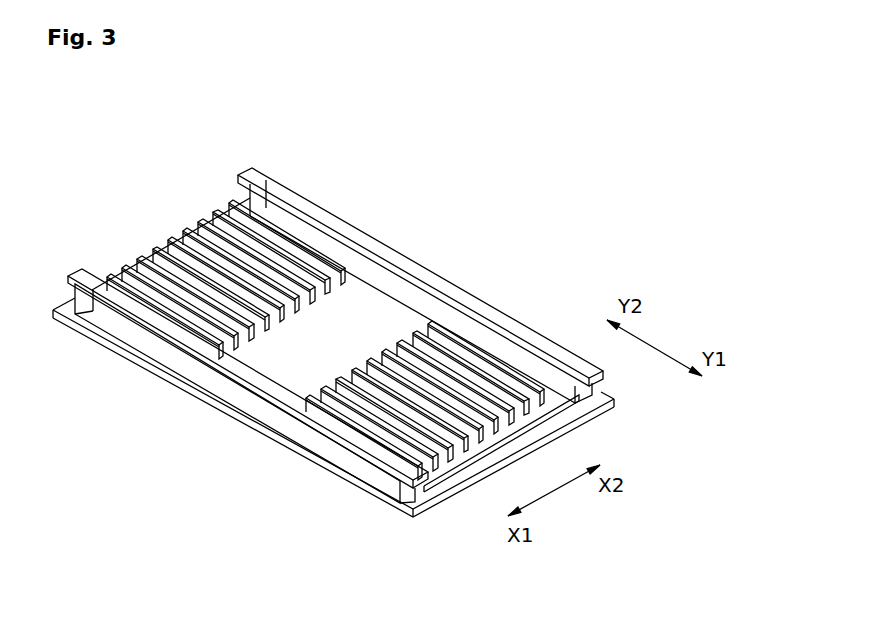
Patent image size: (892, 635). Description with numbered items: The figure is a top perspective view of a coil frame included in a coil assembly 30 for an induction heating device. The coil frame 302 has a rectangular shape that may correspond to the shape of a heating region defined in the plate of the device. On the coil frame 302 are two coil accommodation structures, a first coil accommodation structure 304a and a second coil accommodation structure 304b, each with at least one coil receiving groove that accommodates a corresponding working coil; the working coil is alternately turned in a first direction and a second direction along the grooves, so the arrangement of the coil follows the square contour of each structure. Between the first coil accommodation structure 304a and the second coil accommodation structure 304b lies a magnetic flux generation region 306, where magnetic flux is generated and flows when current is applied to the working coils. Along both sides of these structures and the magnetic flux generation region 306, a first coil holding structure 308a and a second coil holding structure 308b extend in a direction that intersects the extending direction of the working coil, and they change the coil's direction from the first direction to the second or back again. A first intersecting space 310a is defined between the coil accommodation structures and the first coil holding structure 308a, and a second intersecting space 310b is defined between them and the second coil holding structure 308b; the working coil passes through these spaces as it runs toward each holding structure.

The coil assembly 30 is at (384, 172).
The coil frame 302 is at (132, 360).
The first coil accommodation structure 304a is at (303, 233).
The second coil accommodation structure 304b is at (513, 352).
The magnetic flux generation region 306 is at (345, 309).
The first coil holding structure 308a is at (83, 278).
The second coil holding structure 308b is at (257, 176).
The first intersecting space 310a is at (427, 490).
The second intersecting space 310b is at (436, 308).